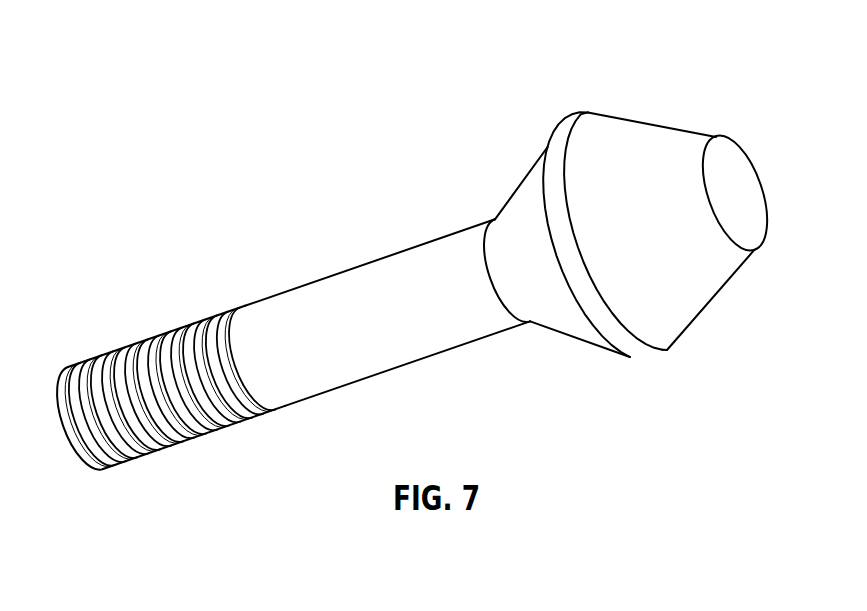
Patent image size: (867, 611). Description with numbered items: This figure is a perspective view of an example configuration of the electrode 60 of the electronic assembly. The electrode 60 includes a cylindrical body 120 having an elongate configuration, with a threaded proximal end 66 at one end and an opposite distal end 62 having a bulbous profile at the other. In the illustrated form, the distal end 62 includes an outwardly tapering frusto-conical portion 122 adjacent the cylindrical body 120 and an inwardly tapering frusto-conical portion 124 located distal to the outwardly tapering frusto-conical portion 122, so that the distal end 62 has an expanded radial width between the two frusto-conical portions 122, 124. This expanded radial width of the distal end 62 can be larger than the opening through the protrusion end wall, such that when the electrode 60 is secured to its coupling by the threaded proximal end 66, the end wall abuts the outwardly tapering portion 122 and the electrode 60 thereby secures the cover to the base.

The electrode 60 is at (134, 60).
The distal end 62 is at (631, 353).
The threaded proximal end 66 is at (196, 440).
The cylindrical body 120 is at (390, 252).
The outwardly tapering frusto-conical portion 122 is at (520, 177).
The inwardly tapering frusto-conical portion 124 is at (667, 124).